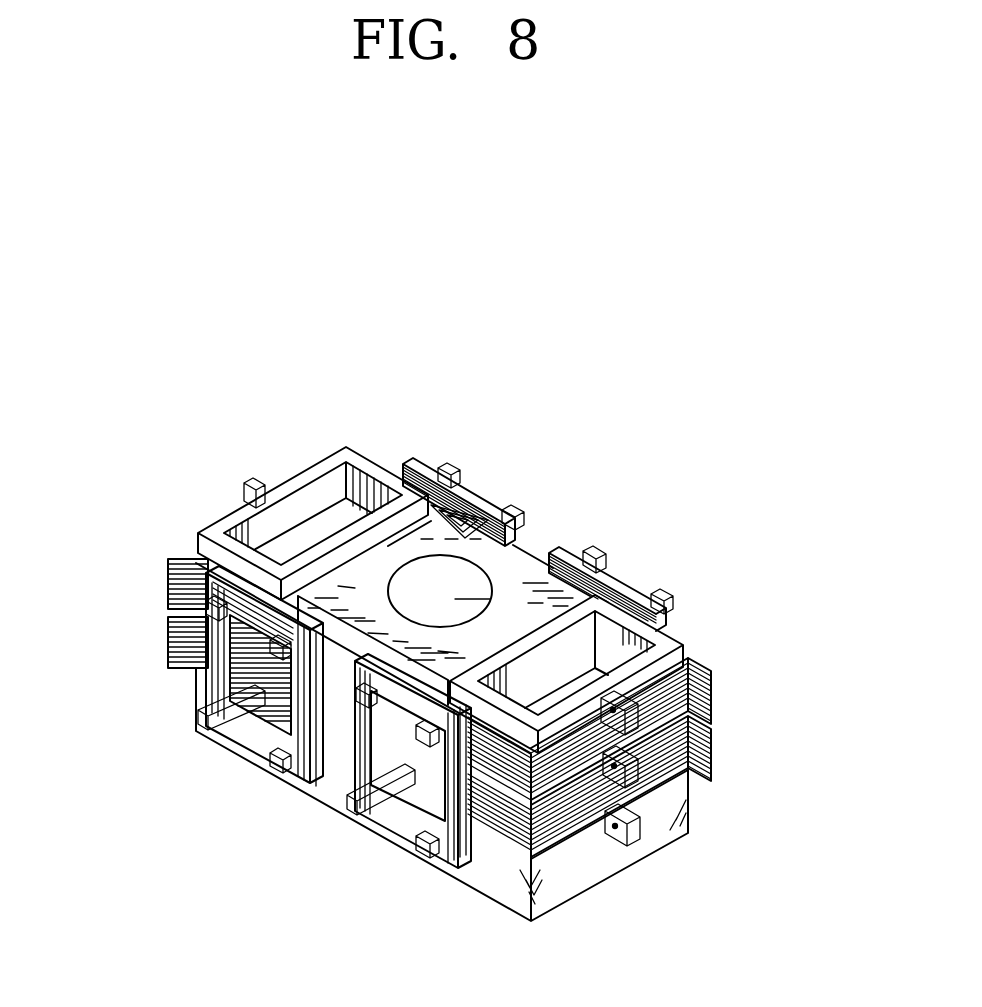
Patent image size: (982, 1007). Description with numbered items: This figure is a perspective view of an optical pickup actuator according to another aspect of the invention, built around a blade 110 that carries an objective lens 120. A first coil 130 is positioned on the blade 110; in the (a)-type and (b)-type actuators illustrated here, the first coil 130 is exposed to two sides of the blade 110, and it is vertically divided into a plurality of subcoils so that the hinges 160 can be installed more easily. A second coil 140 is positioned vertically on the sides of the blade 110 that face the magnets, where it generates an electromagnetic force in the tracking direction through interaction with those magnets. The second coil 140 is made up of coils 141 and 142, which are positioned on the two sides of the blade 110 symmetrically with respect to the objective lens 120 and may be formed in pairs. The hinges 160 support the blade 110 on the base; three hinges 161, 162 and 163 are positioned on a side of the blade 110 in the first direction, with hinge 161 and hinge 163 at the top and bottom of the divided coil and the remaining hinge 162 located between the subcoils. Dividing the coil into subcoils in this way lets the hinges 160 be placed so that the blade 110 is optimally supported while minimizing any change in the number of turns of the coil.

The blade 110 is at (522, 547).
The objective lens 120 is at (598, 566).
The first coil 130 is at (162, 612).
The second coil 140 is at (358, 350).
The coil 141 is at (388, 660).
The coil 142 is at (545, 546).
The hinges 160 is at (800, 745).
The hinge 161 is at (705, 738).
The hinge 162 is at (680, 779).
The hinge 163 is at (632, 823).